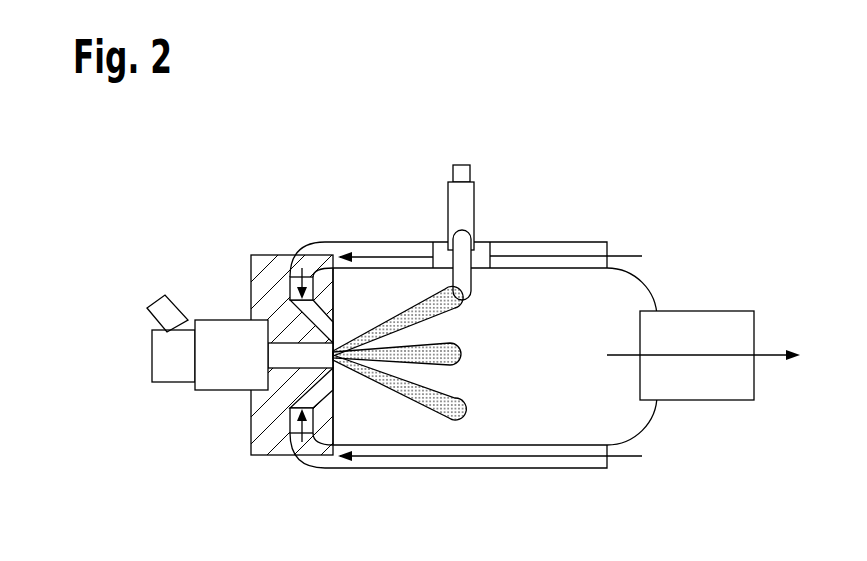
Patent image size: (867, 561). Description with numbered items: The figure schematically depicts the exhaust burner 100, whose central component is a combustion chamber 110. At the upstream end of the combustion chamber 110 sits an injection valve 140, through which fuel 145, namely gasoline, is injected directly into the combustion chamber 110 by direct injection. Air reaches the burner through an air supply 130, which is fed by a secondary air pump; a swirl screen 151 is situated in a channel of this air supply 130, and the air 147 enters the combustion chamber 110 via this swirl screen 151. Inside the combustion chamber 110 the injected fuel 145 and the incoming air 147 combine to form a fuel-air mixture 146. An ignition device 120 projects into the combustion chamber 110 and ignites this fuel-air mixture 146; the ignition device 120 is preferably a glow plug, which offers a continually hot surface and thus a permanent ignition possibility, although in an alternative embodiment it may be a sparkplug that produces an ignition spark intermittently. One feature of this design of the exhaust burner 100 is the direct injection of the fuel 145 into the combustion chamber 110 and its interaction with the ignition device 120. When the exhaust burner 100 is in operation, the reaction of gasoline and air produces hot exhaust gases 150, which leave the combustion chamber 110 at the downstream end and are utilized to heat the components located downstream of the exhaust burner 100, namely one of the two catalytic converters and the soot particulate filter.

The exhaust burner 100 is at (240, 205).
The combustion chamber 110 is at (595, 332).
The ignition device 120 is at (462, 202).
The air supply 130 is at (628, 255).
The injection valve 140 is at (223, 375).
The fuel 145 is at (420, 407).
The fuel-air mixture 146 is at (469, 307).
The air 147 is at (312, 276).
The hot exhaust gases 150 is at (767, 352).
The swirl screen 151 is at (276, 289).